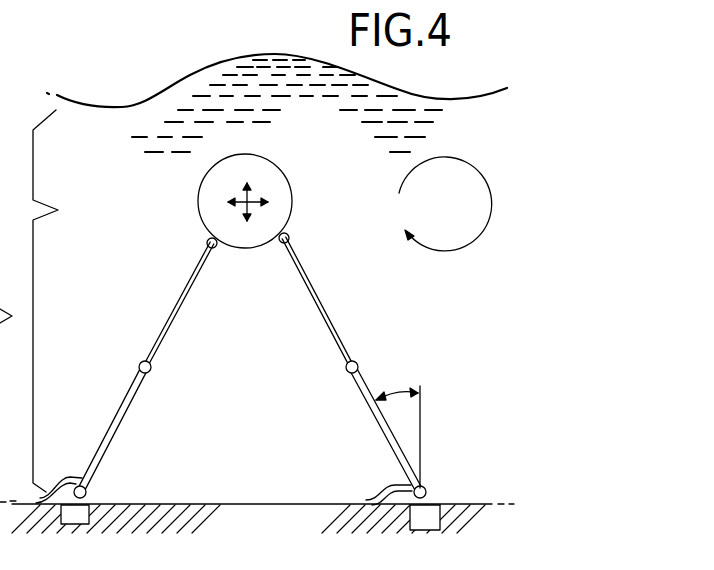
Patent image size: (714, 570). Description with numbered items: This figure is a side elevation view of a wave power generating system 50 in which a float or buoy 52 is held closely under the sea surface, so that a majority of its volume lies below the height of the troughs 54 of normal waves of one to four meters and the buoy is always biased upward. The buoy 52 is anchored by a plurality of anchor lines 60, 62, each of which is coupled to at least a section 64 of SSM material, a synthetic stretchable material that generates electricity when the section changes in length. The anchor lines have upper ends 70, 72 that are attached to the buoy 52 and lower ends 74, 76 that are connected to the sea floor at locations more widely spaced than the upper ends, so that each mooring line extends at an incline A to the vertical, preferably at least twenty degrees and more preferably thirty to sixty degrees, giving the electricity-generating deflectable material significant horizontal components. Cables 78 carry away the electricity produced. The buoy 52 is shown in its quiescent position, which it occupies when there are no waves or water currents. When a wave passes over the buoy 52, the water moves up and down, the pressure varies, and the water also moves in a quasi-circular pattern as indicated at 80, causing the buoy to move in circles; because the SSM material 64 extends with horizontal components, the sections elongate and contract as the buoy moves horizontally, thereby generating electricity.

The wave power generating system 50 is at (113, 244).
The buoy 52 is at (197, 206).
The troughs of normal waves 54 is at (122, 107).
The anchor line 60 is at (172, 312).
The anchor line 62 is at (332, 326).
The section of SSM material 64 is at (128, 417).
The upper end of anchor line 70 is at (214, 250).
The upper end of anchor line 72 is at (291, 239).
The lower end of anchor line 74 is at (92, 494).
The lower end of anchor line 76 is at (428, 492).
The cables 78 is at (72, 478).
The quasi-circular water motion 80 is at (444, 252).
The incline to the vertical A is at (398, 392).